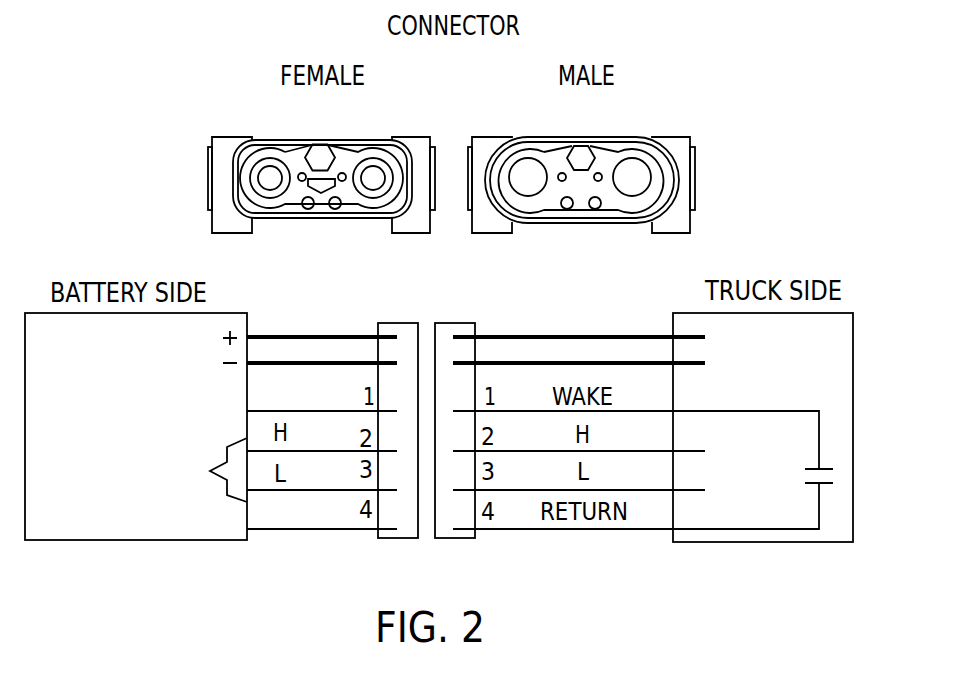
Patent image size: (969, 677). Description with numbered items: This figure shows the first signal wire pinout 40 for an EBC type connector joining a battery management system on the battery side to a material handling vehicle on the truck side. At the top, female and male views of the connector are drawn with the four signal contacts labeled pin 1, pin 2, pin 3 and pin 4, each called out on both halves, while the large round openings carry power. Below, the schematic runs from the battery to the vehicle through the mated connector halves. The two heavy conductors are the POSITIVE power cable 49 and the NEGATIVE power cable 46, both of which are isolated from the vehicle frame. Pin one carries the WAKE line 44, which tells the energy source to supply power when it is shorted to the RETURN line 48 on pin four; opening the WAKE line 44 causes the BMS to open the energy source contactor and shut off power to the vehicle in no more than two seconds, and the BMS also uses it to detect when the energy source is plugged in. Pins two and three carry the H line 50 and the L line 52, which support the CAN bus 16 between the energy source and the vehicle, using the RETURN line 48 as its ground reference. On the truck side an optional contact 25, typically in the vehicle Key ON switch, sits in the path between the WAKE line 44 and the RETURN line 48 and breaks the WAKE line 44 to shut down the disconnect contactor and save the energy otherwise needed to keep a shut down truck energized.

The first pin 1 is at (347, 172).
The second pin 2 is at (302, 170).
The third pin 3 is at (338, 212).
The fourth pin 4 is at (305, 212).
The CAN bus 16 is at (79, 490).
The contact 25 is at (826, 468).
The first signal wire pinout 40 is at (606, 560).
The WAKE line 44 is at (635, 410).
The NEGATIVE power cable 46 is at (555, 361).
The RETURN line 48 is at (550, 530).
The POSITIVE power cable 49 is at (578, 335).
The H line 50 is at (335, 452).
The L line 52 is at (267, 491).